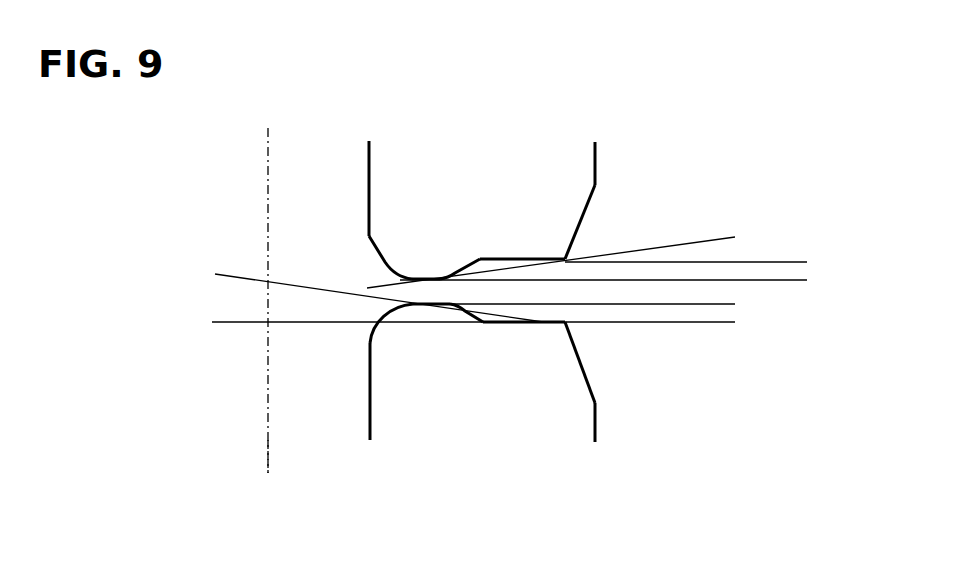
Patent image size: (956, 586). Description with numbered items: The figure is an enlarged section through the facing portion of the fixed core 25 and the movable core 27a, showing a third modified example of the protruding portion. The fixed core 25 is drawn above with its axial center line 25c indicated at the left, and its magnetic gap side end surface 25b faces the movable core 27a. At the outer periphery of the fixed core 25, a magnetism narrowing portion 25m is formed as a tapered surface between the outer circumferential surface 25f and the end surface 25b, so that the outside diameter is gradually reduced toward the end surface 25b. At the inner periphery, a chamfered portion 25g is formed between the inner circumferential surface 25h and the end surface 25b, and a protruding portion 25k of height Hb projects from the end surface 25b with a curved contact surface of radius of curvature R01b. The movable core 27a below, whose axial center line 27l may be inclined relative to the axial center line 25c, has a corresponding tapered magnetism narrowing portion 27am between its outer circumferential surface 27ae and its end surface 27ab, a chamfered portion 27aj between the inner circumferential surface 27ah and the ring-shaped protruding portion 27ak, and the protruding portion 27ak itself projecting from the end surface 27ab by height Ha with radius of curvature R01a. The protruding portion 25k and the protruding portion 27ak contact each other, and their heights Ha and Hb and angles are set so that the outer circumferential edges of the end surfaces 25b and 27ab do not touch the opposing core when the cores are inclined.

The fixed core 25 is at (481, 198).
The axial center line of the fixed core 25c is at (322, 283).
The outer circumferential surface of the fixed core 25f is at (597, 165).
The magnetism narrowing portion 25m is at (580, 218).
The inner circumferential surface of the fixed core 25h is at (369, 183).
The chamfered portion 25g is at (373, 244).
The protruding portion 25k is at (402, 278).
The end surface of the fixed core 25b is at (543, 263).
The radius of curvature of the protruding portion of the fixed core R01b is at (457, 267).
The movable core 27a is at (490, 389).
The axial center line of the movable element 27l is at (268, 452).
The inner circumferential surface of the movable core 27ah is at (370, 387).
The chamfered portion 27aj is at (378, 327).
The protruding portion 27ak is at (413, 304).
The radius of curvature of the protruding portion of the movable core R01a is at (452, 310).
The end surface of the movable core 27ab is at (537, 319).
The magnetism narrowing portion 27am is at (582, 376).
The outer peripheral surface of lower die 27ae is at (596, 422).
The protruding height Ha is at (717, 285).
The protruding height Hb is at (792, 227).